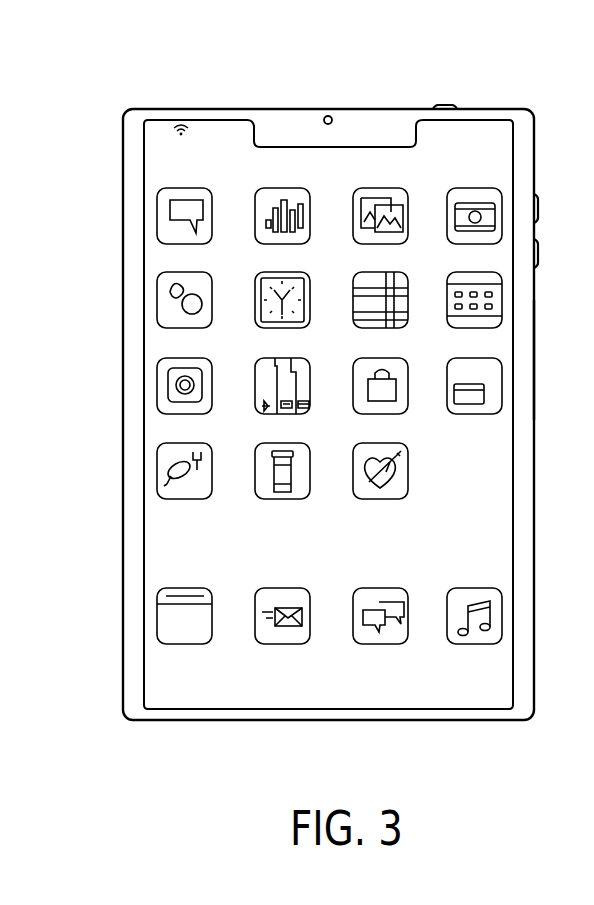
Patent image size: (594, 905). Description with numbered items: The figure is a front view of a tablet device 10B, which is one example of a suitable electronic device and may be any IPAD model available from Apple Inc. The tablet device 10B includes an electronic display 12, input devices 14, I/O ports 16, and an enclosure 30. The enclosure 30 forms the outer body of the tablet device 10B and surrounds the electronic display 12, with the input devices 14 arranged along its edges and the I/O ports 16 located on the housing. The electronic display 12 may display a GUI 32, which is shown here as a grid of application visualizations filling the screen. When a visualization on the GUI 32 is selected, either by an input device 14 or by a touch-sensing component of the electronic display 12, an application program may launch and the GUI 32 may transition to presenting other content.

The tablet device 10B is at (138, 66).
The electronic display 12 is at (513, 406).
The input devices 14 is at (445, 108).
The I/O ports 16 is at (200, 109).
The enclosure 30 is at (535, 360).
The GUI 32 is at (488, 490).